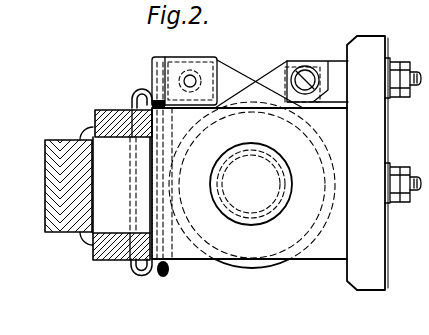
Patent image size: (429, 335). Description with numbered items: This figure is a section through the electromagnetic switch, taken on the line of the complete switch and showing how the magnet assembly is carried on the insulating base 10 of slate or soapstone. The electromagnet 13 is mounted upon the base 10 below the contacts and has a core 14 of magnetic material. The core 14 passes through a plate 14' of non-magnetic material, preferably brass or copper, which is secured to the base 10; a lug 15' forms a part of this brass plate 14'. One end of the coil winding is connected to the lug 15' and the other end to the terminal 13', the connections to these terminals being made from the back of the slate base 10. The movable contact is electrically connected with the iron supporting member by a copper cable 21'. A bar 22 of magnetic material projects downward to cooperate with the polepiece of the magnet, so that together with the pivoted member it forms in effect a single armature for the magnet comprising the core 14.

The insulating base 10 is at (383, 131).
The electromagnet 13 is at (252, 204).
The terminal 13' is at (318, 62).
The core 14 is at (251, 184).
The plate 14' is at (249, 181).
The lug 15' is at (207, 74).
The copper cable 21' is at (154, 201).
The bar 22 is at (45, 184).